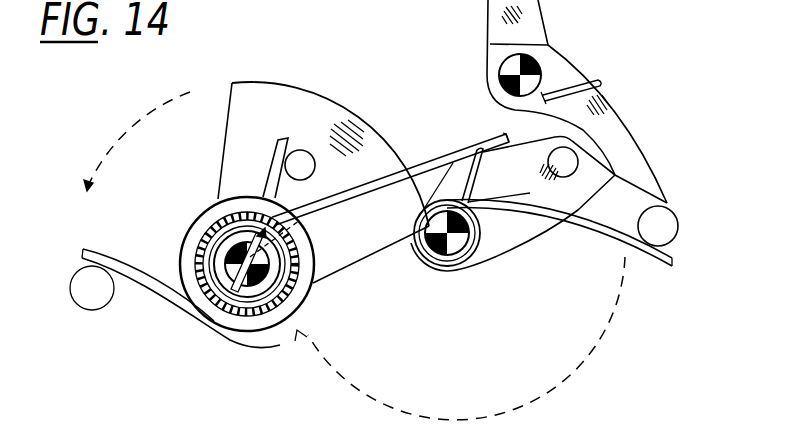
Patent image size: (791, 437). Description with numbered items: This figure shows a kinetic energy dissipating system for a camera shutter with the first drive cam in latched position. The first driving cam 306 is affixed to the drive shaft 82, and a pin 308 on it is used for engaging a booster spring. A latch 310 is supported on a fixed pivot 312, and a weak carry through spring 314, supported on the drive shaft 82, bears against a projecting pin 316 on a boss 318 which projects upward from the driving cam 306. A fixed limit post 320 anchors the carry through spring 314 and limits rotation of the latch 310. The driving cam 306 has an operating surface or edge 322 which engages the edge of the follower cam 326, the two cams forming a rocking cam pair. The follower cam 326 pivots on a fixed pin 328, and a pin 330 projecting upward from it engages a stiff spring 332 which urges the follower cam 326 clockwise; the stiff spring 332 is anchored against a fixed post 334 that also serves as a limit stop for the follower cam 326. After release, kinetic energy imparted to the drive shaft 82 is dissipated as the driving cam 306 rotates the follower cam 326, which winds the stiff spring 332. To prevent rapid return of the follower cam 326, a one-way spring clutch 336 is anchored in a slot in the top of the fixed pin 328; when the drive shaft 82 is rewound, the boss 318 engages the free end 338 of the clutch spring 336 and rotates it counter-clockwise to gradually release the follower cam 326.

The drive shaft 82 is at (430, 266).
The first driving cam 306 is at (520, 232).
The pin 308 is at (571, 169).
The latch 310 is at (645, 137).
The fixed pivot 312 is at (530, 69).
The weak carry through spring 314 is at (646, 262).
The projecting pin 316 is at (512, 155).
The boss 318 is at (458, 157).
The fixed limit post 320 is at (665, 236).
The operating surface or edge 322 is at (503, 260).
The follower cam 326 is at (296, 96).
The fixed pin 328 is at (227, 282).
The pin 330 is at (306, 169).
The stiff spring 332 is at (279, 162).
The fixed post 334 is at (97, 303).
The one-way spring clutch 336 is at (337, 203).
The free end 338 is at (498, 131).